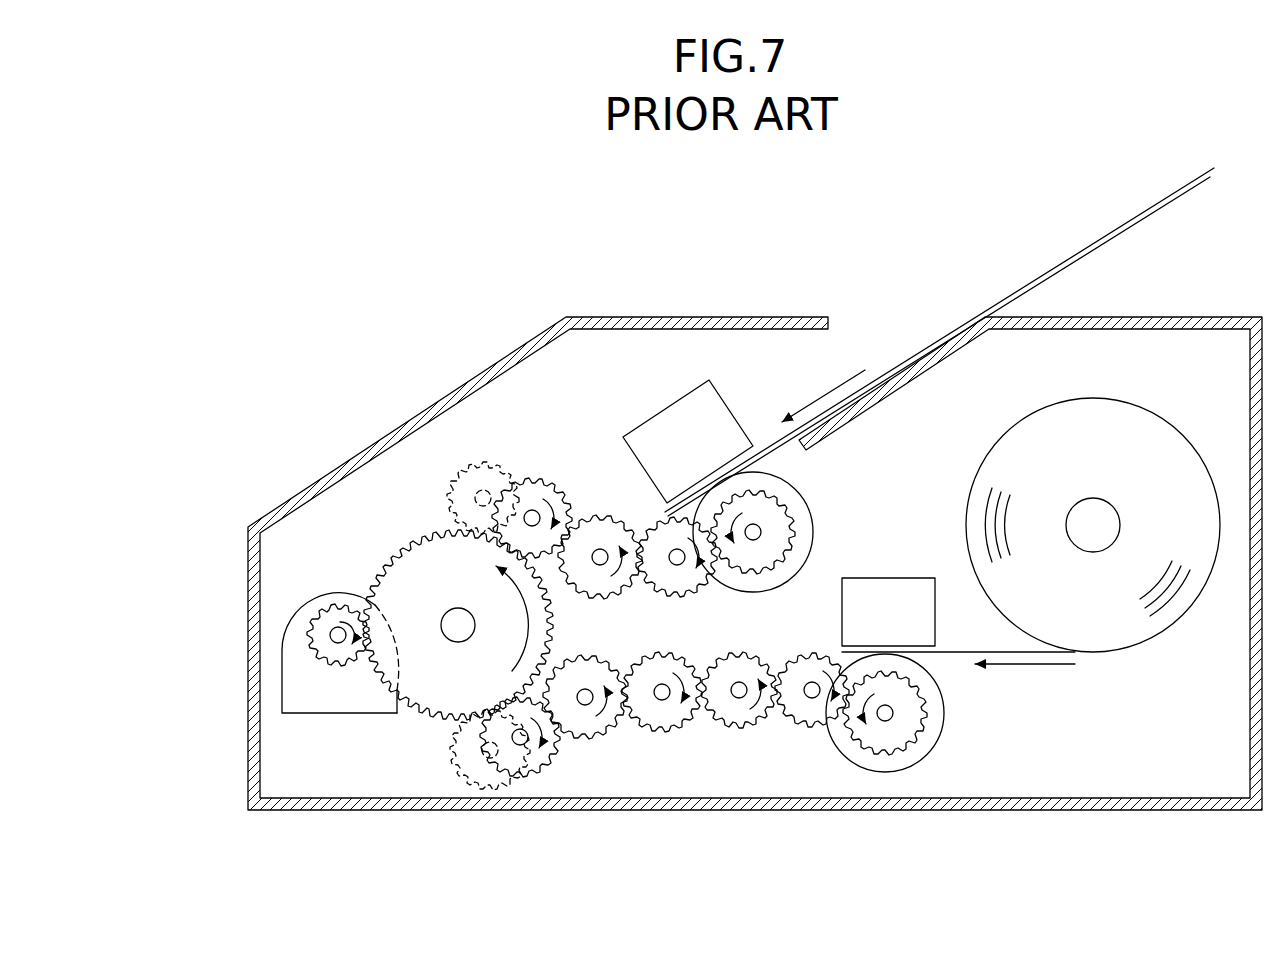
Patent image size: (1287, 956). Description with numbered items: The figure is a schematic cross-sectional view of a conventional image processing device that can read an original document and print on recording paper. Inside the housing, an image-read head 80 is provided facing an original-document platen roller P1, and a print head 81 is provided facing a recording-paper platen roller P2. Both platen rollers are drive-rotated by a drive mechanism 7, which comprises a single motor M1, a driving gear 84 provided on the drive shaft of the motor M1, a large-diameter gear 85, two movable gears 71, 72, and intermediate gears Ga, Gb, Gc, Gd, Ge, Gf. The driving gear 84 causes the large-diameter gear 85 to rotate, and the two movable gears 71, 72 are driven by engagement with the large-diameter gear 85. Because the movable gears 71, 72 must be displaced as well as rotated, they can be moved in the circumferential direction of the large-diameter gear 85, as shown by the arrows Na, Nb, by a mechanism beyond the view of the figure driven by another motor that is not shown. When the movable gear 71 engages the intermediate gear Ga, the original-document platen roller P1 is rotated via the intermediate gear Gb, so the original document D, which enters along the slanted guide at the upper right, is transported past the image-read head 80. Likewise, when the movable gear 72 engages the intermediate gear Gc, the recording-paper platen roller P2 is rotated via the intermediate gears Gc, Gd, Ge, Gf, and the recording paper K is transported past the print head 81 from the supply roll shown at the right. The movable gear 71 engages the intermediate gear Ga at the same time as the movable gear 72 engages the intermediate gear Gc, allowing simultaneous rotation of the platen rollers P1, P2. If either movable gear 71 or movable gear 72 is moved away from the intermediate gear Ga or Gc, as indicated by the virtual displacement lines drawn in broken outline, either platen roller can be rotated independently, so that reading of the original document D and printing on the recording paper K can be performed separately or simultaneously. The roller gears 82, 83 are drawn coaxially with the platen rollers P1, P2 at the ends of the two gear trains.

The drive mechanism 7 is at (413, 532).
The movable gear 71 is at (552, 484).
The movable gear 72 is at (560, 745).
The image-read head 80 is at (691, 422).
The print head 81 is at (898, 593).
The feed roller gear 82 is at (792, 493).
The discharge roller gear 83 is at (885, 735).
The driving gear 84 is at (333, 620).
The large-diameter gear 85 is at (400, 577).
The motor M1 is at (303, 628).
The arrow Na is at (499, 453).
The arrow Nb is at (556, 768).
The intermediate gear Ga is at (605, 583).
The intermediate gear Gb is at (681, 597).
The intermediate gear Gc is at (590, 720).
The intermediate gear Gd is at (668, 715).
The intermediate gear Ge is at (735, 715).
The intermediate gear Gf is at (805, 715).
The original-document platen roller P1 is at (805, 528).
The recording-paper platen roller P2 is at (930, 740).
The original document D is at (973, 317).
The recording paper K is at (972, 655).